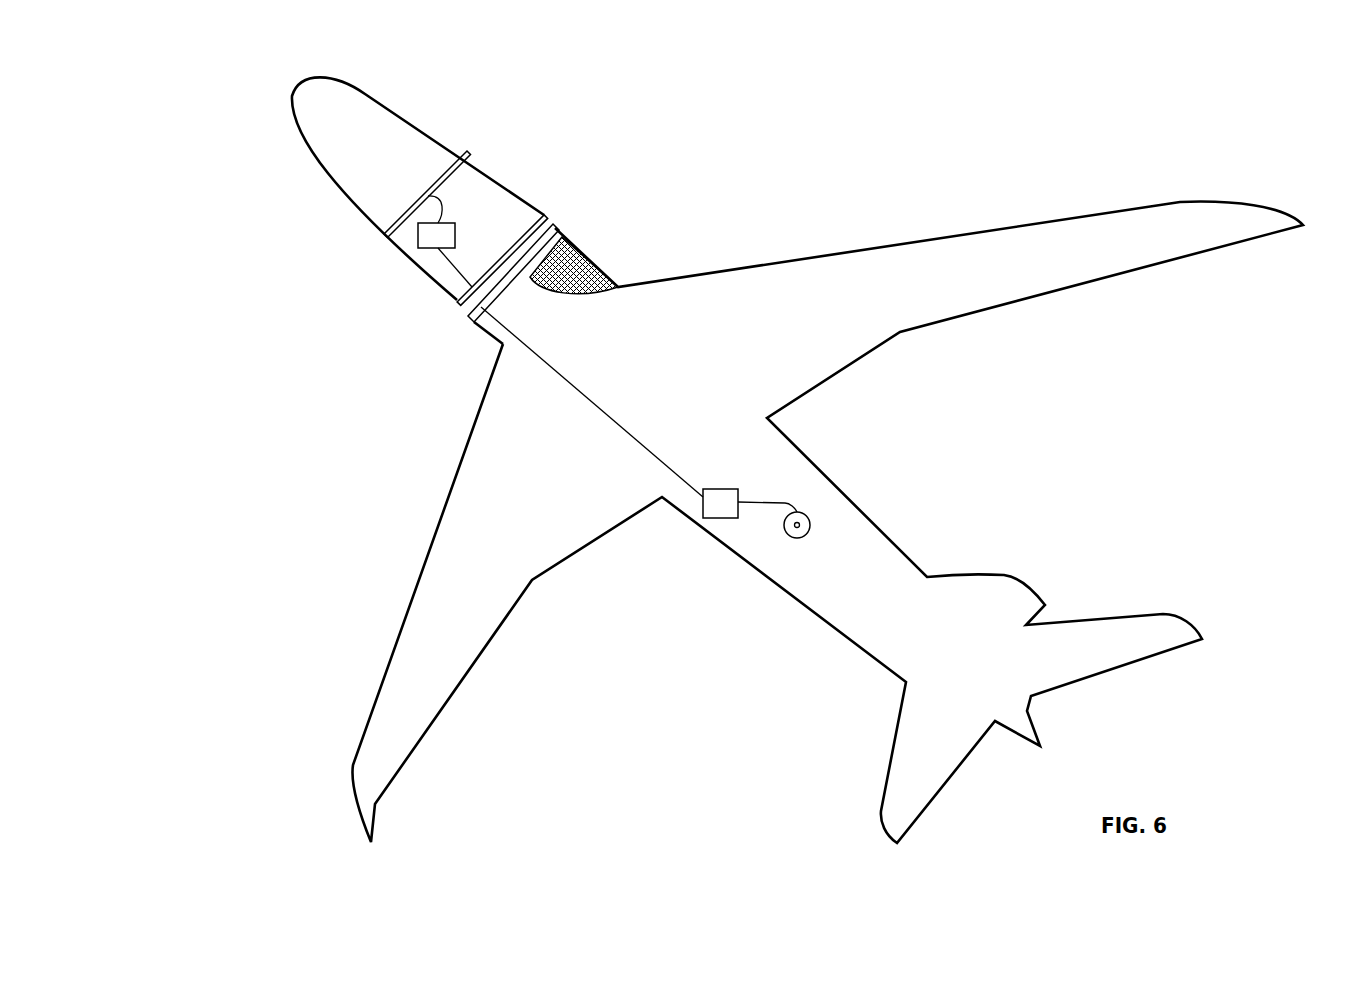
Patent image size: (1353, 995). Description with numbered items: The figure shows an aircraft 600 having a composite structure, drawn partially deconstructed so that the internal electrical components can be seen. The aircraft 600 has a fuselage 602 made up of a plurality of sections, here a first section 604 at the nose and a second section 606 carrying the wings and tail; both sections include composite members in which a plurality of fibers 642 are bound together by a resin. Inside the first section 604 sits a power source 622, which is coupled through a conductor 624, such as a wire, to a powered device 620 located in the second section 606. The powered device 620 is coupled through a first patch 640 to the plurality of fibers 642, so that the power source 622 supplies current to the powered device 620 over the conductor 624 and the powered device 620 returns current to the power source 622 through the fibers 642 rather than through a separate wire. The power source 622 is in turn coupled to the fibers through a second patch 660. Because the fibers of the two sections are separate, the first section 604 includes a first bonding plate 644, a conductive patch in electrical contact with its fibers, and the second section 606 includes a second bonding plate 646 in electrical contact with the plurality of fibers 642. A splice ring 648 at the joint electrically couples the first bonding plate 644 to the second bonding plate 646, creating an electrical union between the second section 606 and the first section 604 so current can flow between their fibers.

The aircraft 600 is at (920, 112).
The fuselage 602 is at (292, 95).
The first section 604 is at (302, 213).
The second section 606 is at (753, 236).
The powered device 620 is at (720, 518).
The power source 622 is at (418, 237).
The conductor 624 is at (569, 379).
The first patch 640 is at (811, 525).
The plurality of fibers 642 is at (590, 290).
The first bonding plate 644 is at (545, 214).
The second bonding plate 646 is at (474, 322).
The splice ring 648 is at (463, 314).
The second patch 660 is at (466, 150).